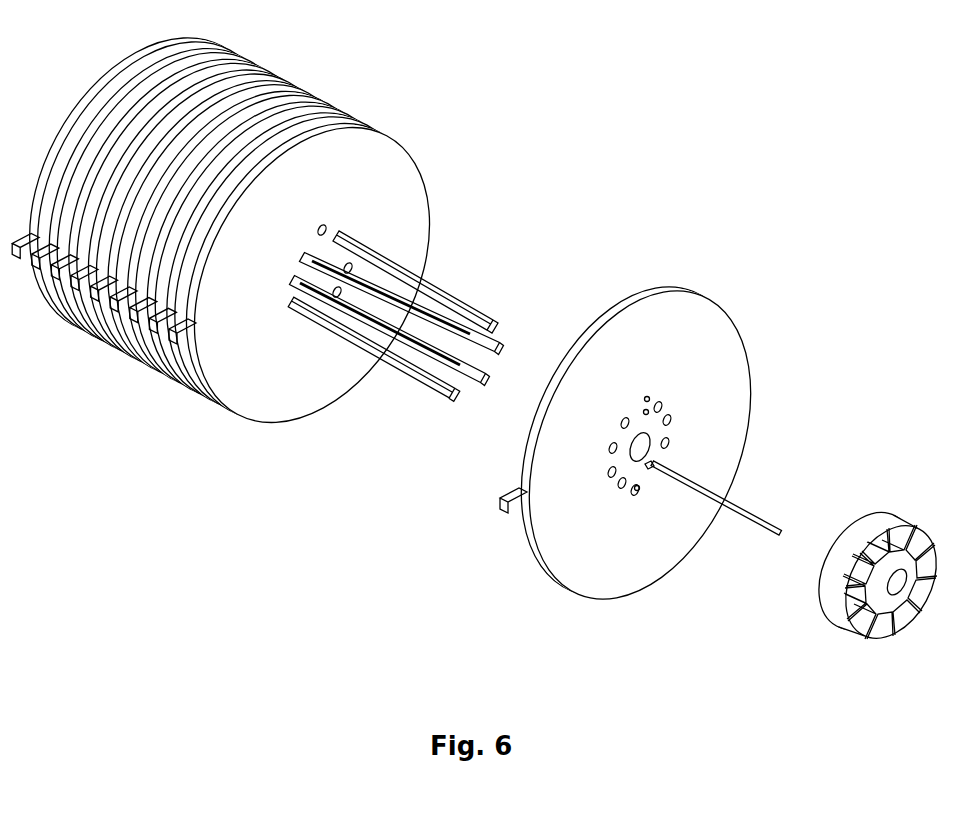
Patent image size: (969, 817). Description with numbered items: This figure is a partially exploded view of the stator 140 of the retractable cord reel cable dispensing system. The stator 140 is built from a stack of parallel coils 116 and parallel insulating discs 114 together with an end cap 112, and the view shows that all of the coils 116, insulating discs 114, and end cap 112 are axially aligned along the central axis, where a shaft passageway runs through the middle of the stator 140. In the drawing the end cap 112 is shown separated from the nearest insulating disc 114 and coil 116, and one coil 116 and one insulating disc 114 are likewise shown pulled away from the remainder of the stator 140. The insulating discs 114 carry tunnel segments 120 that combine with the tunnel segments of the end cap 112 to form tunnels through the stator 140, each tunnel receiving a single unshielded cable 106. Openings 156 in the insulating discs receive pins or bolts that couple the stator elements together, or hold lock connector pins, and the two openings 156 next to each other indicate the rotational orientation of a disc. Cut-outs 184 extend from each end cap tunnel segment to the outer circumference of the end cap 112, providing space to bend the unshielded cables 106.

The stator 140 is at (501, 41).
The coil 116 is at (417, 316).
The insulating disc 114 is at (347, 207).
The unshielded cable 106 is at (427, 284).
The tunnel segment 120 is at (668, 418).
The opening 156 is at (645, 399).
The end cap 112 is at (877, 564).
The cut-out 184 is at (822, 601).